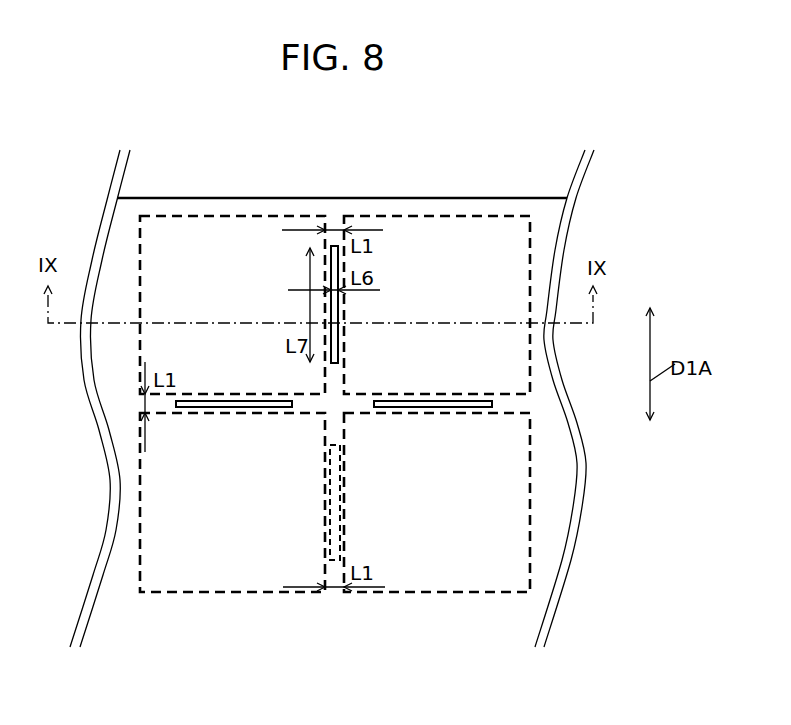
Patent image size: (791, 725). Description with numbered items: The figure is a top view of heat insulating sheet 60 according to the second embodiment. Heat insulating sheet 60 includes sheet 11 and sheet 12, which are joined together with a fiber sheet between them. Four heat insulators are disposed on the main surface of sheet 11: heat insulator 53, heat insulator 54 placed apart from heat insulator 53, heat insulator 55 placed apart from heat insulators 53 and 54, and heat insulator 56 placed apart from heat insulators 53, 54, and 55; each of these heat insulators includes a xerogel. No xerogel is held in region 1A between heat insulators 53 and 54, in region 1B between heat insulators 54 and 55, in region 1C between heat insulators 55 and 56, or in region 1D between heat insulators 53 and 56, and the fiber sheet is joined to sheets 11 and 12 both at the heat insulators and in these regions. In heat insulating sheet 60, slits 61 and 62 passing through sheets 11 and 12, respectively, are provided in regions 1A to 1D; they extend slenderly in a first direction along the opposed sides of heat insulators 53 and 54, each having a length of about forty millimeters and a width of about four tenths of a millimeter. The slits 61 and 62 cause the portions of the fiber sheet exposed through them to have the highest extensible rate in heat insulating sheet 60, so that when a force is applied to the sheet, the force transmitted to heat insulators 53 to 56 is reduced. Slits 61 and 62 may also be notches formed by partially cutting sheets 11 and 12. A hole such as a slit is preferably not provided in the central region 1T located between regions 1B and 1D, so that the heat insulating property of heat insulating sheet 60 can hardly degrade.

The sheet 11 is at (362, 398).
The sheet 12 is at (533, 600).
The heat insulator 53 is at (182, 235).
The heat insulator 54 is at (377, 228).
The heat insulator 55 is at (388, 557).
The heat insulator 56 is at (180, 555).
The heat insulating sheet 60 is at (532, 165).
The slit 61 is at (354, 395).
The slit 62 is at (337, 260).
The region 1A is at (333, 227).
The region 1B is at (523, 404).
The region 1C is at (334, 580).
The region 1D is at (148, 402).
The region 1T is at (333, 408).